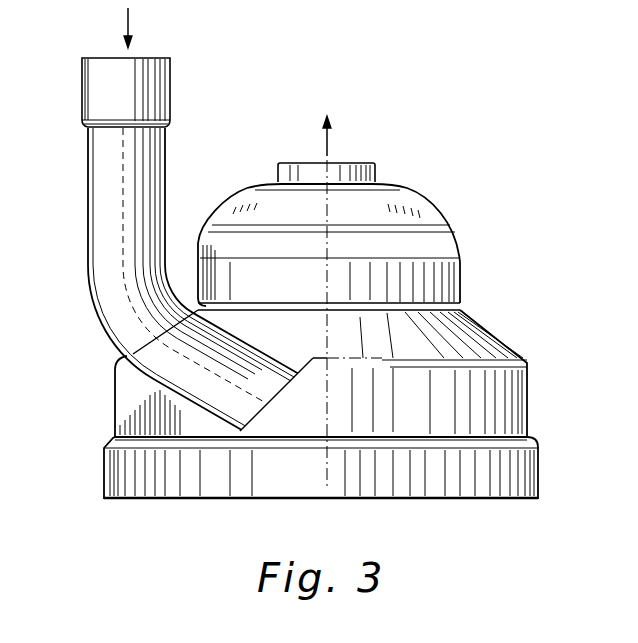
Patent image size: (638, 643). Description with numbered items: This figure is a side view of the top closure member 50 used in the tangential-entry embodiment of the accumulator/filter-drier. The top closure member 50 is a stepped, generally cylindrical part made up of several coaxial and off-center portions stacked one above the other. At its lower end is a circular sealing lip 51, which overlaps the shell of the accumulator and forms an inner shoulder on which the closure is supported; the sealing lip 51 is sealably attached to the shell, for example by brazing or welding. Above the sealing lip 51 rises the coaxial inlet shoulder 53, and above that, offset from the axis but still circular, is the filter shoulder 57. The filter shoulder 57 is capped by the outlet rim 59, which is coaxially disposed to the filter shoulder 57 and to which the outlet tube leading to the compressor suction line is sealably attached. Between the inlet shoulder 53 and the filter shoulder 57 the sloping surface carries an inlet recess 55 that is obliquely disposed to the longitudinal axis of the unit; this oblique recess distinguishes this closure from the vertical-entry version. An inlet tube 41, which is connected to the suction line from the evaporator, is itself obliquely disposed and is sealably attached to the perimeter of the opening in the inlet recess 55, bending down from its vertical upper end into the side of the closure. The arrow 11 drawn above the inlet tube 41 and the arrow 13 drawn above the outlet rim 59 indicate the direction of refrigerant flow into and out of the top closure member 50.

The inlet flow direction arrow 11 is at (129, 24).
The outlet flow direction arrow 13 is at (331, 143).
The inlet tube 41 is at (100, 259).
The top closure member 50 is at (312, 324).
The circular sealing lip 51 is at (104, 480).
The coaxial inlet shoulder 53 is at (527, 363).
The inlet recess 55 is at (313, 357).
The filter shoulder 57 is at (200, 242).
The outlet rim 59 is at (380, 174).